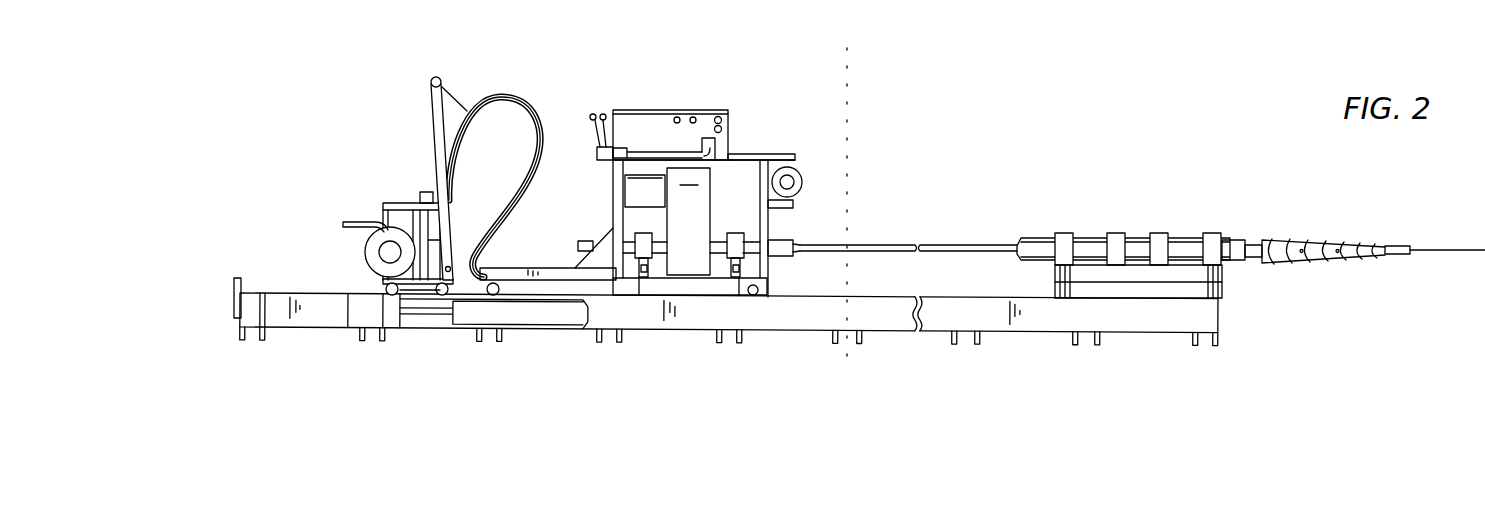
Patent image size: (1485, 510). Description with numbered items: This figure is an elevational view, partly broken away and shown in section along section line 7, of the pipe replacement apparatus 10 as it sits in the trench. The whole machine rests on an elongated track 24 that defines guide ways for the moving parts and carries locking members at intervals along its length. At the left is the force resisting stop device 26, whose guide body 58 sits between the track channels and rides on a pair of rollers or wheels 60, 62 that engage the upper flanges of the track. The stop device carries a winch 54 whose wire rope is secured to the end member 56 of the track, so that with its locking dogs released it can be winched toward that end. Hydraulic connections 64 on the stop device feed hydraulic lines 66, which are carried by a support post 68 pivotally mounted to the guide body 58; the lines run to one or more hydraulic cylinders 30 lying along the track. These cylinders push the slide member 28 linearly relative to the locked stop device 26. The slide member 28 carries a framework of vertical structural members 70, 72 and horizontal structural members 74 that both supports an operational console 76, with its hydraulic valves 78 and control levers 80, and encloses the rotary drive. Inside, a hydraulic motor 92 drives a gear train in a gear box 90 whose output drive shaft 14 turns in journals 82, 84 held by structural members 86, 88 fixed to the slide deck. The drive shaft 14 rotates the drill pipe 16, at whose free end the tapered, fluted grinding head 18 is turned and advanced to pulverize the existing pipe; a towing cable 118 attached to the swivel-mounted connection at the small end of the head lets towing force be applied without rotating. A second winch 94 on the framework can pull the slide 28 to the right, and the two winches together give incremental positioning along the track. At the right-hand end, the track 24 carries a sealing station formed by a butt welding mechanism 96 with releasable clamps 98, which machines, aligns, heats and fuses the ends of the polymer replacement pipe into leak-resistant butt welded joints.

The section line 7- 7 is at (868, 42).
The pipe replacement apparatus 10 is at (735, 76).
The drive shaft or stem 14 is at (773, 246).
The drill pipe 16 is at (965, 244).
The tapered fluted grinding head 18 is at (1275, 247).
The elongated track 24 is at (728, 348).
The force resisting stop device 26 is at (367, 256).
The slide member 28 is at (637, 296).
The hydraulic cylinder 30 is at (538, 315).
The winch 54 is at (377, 249).
The end member 56 is at (233, 282).
The guide body 58 is at (420, 290).
The roller or wheel 60 is at (390, 287).
The roller or wheel 62 is at (444, 296).
The hydraulic connections 64 is at (424, 192).
The hydraulic lines 66 is at (498, 103).
The support post 68 is at (432, 98).
The vertical structural member 70 is at (619, 213).
The vertical structural member 72 is at (762, 268).
The horizontal structural member 74 is at (745, 153).
The operational console 76 is at (650, 110).
The hydraulic valves 78 is at (597, 153).
The control levers 80 is at (603, 114).
The journal 82 is at (644, 234).
The journal 84 is at (733, 233).
The structural member 86 is at (644, 277).
The structural member 88 is at (738, 277).
The gear box 90 is at (700, 190).
The hydraulic motor 92 is at (638, 187).
The second winch 94 is at (798, 177).
The butt welding mechanism 96 is at (1139, 278).
The releasable clamps 98 is at (1063, 233).
The towing cable 118 is at (1455, 256).